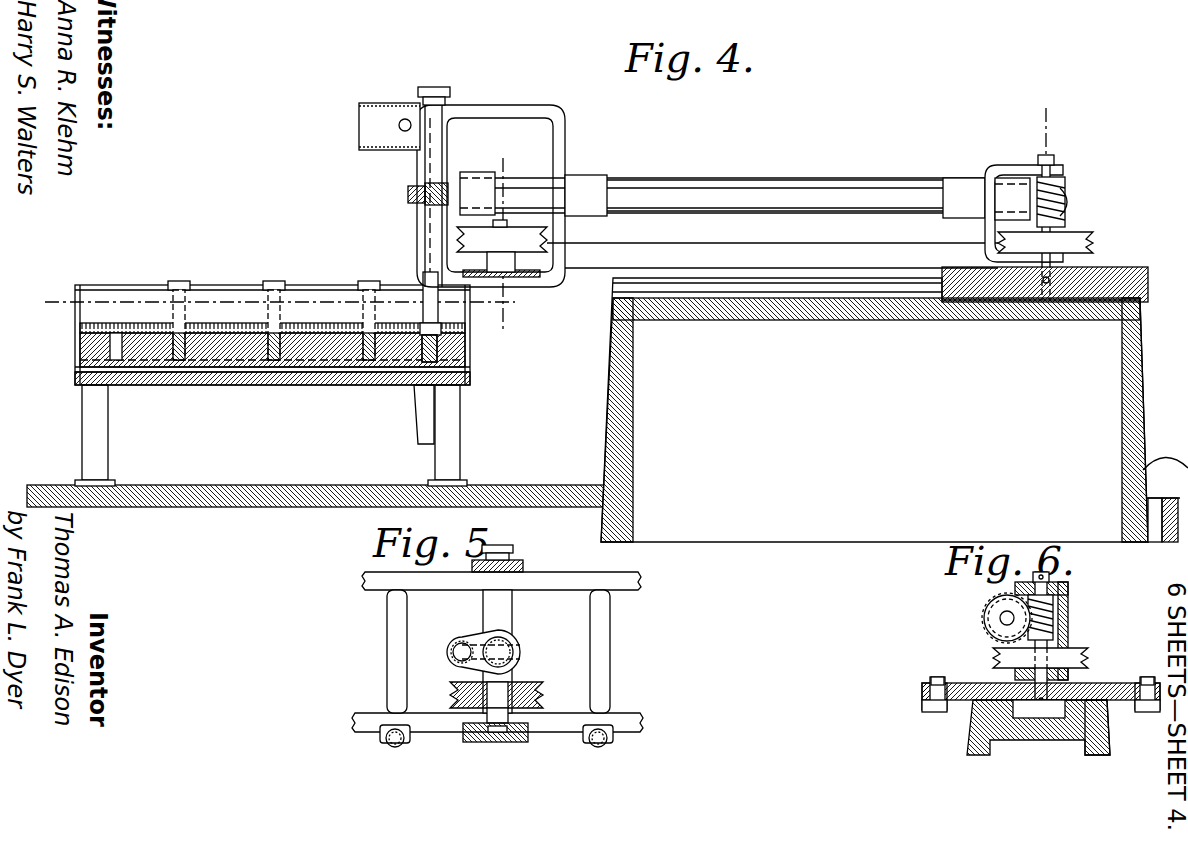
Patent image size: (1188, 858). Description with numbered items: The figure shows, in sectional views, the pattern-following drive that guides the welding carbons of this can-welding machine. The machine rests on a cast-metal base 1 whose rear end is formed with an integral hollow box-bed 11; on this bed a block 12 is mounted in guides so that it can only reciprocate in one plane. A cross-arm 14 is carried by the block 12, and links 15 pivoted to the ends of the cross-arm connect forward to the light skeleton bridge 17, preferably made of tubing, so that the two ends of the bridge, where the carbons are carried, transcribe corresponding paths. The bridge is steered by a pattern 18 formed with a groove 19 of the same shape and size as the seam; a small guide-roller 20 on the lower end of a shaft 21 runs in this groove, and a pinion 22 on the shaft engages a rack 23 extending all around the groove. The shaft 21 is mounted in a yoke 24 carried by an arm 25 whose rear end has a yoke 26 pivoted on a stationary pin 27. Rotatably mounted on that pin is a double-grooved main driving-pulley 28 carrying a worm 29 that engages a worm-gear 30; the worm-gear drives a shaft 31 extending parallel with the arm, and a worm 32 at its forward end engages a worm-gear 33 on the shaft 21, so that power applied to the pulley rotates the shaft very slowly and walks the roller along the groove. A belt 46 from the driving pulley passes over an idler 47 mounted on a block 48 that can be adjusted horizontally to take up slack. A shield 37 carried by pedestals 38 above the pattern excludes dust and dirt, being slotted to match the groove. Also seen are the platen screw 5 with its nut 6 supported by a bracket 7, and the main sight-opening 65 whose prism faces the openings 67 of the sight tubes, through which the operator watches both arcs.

In FIG. 4, the base 1 is at (176, 489).
In FIG. 4, the screw 5 is at (485, 239).
In FIG. 4, the nut 6 is at (1045, 227).
In FIG. 4, the bracket 7 is at (283, 305).
In FIG. 4, the hollow box-bed 11 is at (678, 320).
In FIG. 6, the hollow box-bed 11 is at (1100, 737).
In FIG. 4, the block 12 is at (1122, 268).
In FIG. 6, the block 12 is at (1048, 720).
In FIG. 6, the cross-arm 14 is at (1105, 685).
In FIG. 6, the links 15 is at (925, 703).
In FIG. 5, the skeleton bridge 17 is at (611, 650).
In FIG. 4, the pattern 18 is at (229, 352).
In FIG. 4, the groove 19 is at (117, 345).
In FIG. 4, the guide-roller 20 is at (425, 348).
In FIG. 4, the shaft 21 is at (433, 232).
In FIG. 4, the pinion 22 is at (442, 338).
In FIG. 4, the rack 23 is at (297, 308).
In FIG. 4, the yoke 24 is at (498, 108).
In FIG. 5, the yoke 24 is at (523, 566).
In FIG. 4, the arm 25 is at (629, 178).
In FIG. 5, the arm 25 is at (506, 640).
In FIG. 4, the yoke 26 is at (1008, 166).
In FIG. 6, the yoke 26 is at (1062, 586).
In FIG. 4, the stationary pin 27 is at (1052, 162).
In FIG. 6, the stationary pin 27 is at (1047, 573).
In FIG. 4, the main driving-pulley 28 is at (1068, 232).
In FIG. 6, the main driving-pulley 28 is at (1070, 656).
In FIG. 6, the worm 29 is at (1055, 612).
In FIG. 4, the worm-gear 30 is at (1066, 195).
In FIG. 6, the worm-gear 30 is at (988, 604).
In FIG. 4, the shaft 31 is at (853, 197).
In FIG. 5, the shaft 31 is at (462, 641).
In FIG. 6, the shaft 31 is at (1000, 620).
In FIG. 4, the worm 32 is at (412, 205).
In FIG. 4, the worm-gear 33 is at (412, 190).
In FIG. 4, the shield 37 is at (78, 290).
In FIG. 4, the pedestals 38 is at (190, 313).
In FIG. 4, the belt 46 is at (640, 243).
In FIG. 4, the idler 47 is at (527, 232).
In FIG. 5, the idler 47 is at (530, 683).
In FIG. 5, the block 48 is at (529, 733).
In FIG. 4, the main sight-opening 65 is at (373, 116).
In FIG. 4, the openings 67 is at (405, 118).